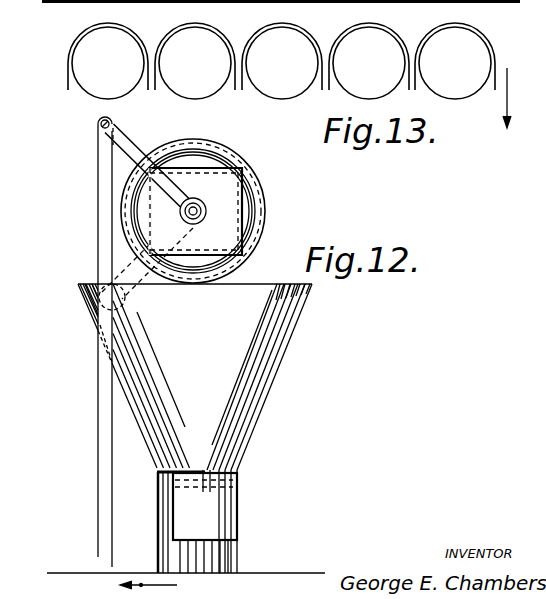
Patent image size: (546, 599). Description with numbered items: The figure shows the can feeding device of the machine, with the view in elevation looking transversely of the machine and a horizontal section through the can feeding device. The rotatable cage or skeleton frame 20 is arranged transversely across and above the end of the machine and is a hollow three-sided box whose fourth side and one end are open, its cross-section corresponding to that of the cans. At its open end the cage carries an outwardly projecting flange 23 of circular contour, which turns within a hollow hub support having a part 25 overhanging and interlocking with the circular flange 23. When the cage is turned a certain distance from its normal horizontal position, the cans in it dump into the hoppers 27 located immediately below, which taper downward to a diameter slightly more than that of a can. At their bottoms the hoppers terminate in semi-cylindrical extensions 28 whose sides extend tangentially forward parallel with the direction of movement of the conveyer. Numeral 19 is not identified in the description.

In FIG. 13, the pipe 19 is at (432, 56).
In FIG. 13, the semi-cylindrical extension 28 is at (67, 76).
In FIG. 12, the semi-cylindrical extension 28 is at (197, 521).
In FIG. 12, the overhanging part 25 is at (189, 143).
In FIG. 12, the flange 23 is at (198, 160).
In FIG. 12, the rotatable cage 20 is at (196, 211).
In FIG. 12, the hopper 27 is at (195, 428).